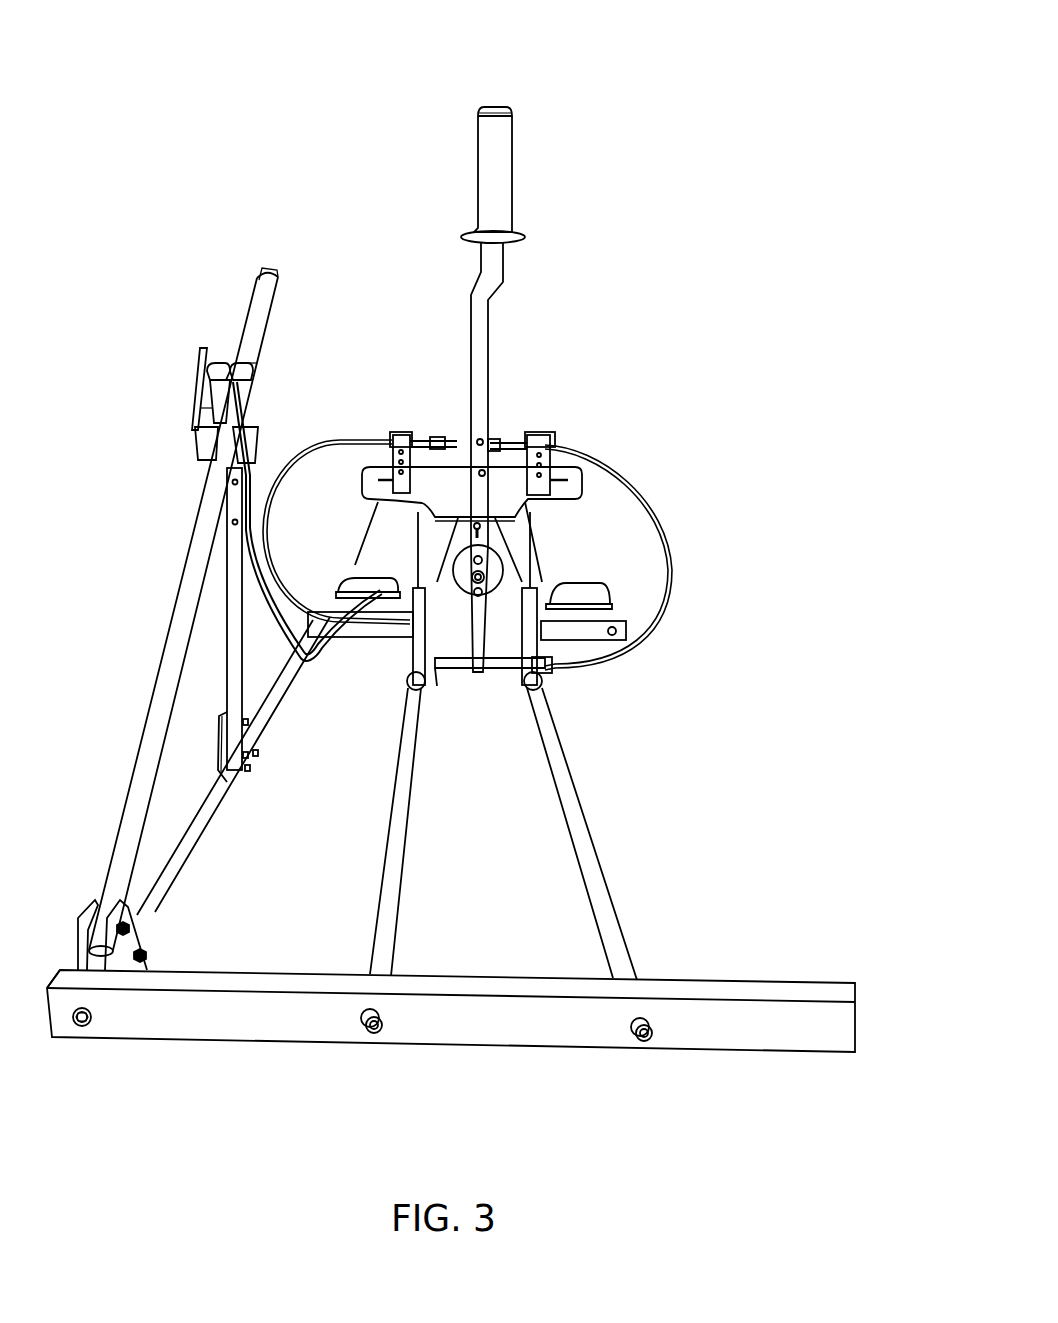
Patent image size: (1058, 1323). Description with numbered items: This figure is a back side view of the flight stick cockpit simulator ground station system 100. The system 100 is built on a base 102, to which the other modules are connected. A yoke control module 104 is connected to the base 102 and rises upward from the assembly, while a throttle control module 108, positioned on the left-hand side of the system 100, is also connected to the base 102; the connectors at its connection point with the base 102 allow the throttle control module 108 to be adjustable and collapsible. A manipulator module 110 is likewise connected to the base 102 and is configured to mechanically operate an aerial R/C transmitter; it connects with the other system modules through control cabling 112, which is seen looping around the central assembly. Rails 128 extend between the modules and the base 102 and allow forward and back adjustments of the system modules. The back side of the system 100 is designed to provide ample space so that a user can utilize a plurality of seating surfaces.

The flight stick cockpit simulator ground station system 100 is at (710, 46).
The base 102 is at (857, 1018).
The yoke control module 104 is at (513, 172).
The throttle control module 108 is at (262, 323).
The manipulator module 110 is at (568, 472).
The control cabling 112 is at (340, 438).
The rails 128 is at (593, 868).